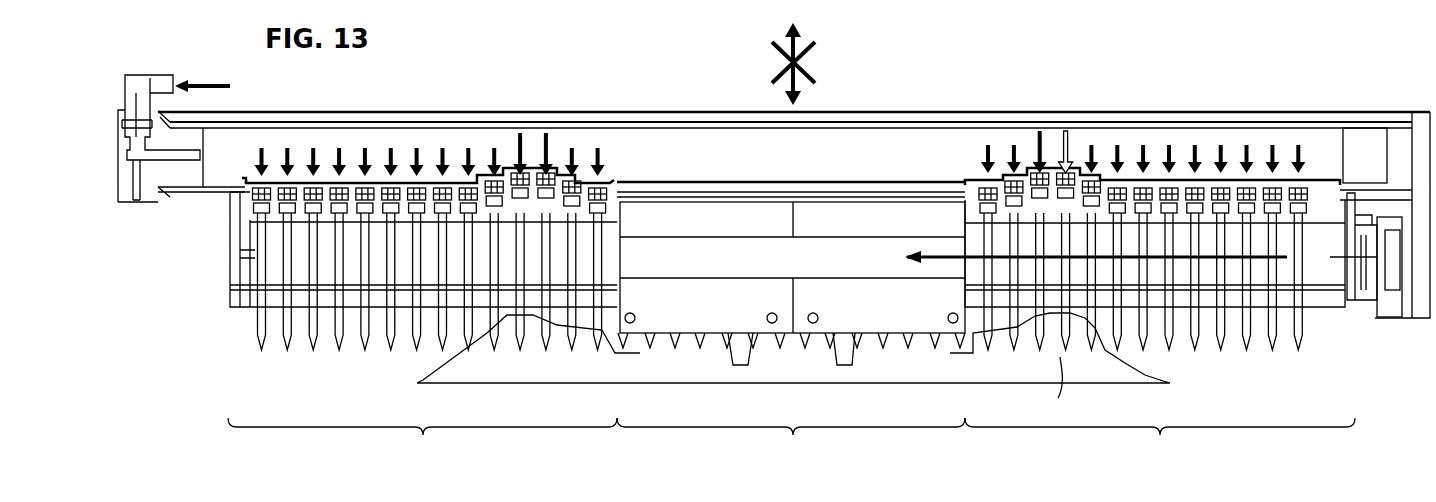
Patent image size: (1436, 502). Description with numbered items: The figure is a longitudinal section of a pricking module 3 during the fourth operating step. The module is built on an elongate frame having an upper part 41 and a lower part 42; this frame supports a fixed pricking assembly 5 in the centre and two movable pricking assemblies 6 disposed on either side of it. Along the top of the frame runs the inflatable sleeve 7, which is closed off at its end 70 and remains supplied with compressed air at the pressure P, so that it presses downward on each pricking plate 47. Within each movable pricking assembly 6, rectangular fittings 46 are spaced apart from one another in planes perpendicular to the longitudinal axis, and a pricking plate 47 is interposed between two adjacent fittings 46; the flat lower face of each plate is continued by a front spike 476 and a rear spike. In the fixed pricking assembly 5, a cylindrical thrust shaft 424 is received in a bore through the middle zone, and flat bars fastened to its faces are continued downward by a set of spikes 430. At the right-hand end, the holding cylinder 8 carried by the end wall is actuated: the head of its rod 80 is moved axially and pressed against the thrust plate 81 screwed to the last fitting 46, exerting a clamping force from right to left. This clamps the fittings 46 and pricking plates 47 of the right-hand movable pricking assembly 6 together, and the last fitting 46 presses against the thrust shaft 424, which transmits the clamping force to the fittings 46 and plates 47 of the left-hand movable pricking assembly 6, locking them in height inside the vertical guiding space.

The pricking module 3 is at (886, 62).
The fixed pricking assembly 5 is at (791, 441).
The movable pricking assembly 6 is at (791, 441).
The inflatable sleeve 7 is at (672, 158).
The holding cylinder 8 is at (1412, 257).
The upper part 41 is at (110, 73).
The lower part 42 is at (255, 350).
The rectangular fitting 46 is at (1258, 240).
The pricking plate 47 is at (1248, 273).
The end of the inflatable sleeve 70 is at (1396, 159).
The rod 80 is at (1370, 283).
The thrust plate 81 is at (1357, 243).
The thrust shaft 424 is at (811, 269).
The spikes 430 is at (905, 337).
The front spike 476 is at (365, 336).